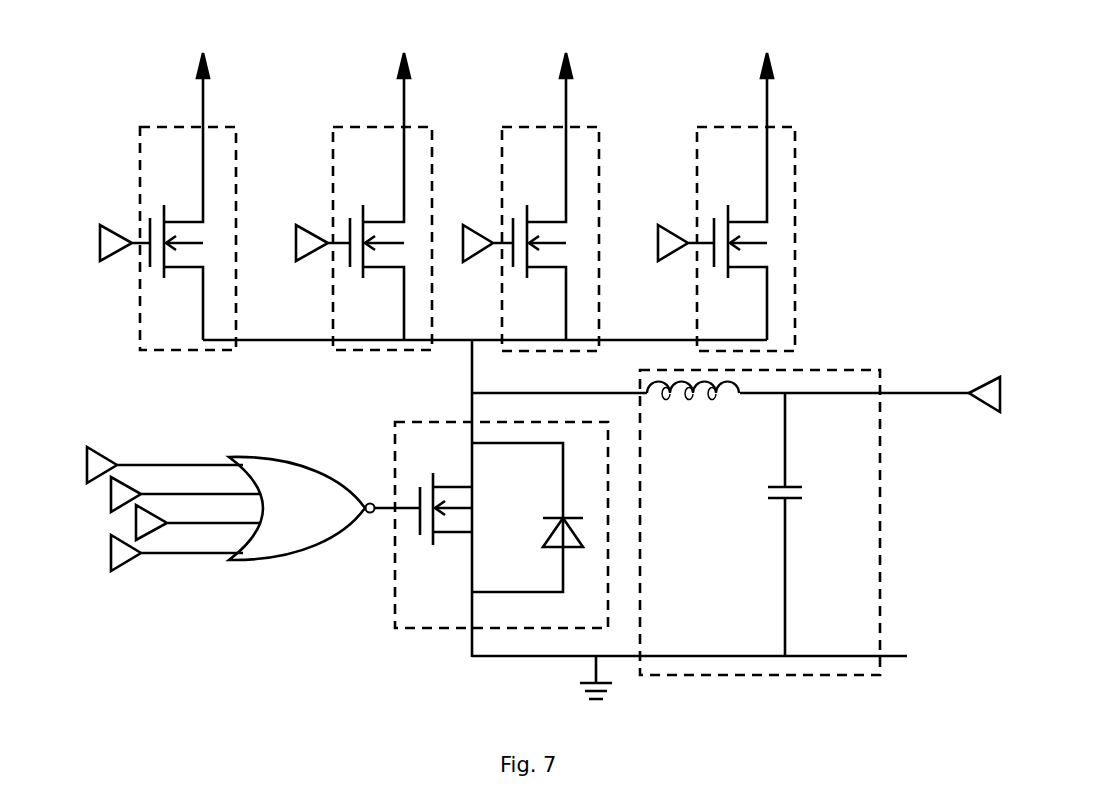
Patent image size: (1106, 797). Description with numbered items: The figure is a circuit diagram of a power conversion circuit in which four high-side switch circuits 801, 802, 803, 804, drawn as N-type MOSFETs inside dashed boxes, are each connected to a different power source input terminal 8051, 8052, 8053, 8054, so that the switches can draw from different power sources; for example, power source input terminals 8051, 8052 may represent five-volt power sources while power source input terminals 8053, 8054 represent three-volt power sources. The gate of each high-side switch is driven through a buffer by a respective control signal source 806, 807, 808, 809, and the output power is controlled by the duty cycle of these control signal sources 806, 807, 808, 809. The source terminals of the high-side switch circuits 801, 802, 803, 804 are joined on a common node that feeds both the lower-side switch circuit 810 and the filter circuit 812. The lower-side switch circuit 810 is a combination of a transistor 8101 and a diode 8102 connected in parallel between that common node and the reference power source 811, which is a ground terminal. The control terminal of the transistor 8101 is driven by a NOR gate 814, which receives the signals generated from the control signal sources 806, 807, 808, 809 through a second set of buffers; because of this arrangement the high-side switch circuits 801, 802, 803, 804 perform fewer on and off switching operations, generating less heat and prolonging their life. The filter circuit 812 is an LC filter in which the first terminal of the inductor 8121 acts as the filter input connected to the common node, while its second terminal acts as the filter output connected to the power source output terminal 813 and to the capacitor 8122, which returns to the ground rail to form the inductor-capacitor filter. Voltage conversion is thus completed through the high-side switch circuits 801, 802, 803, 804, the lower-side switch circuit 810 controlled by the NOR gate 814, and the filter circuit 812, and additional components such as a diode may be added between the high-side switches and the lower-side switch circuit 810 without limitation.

The high-side switch circuit 801 is at (157, 127).
The high-side switch circuit 802 is at (352, 127).
The high-side switch circuit 803 is at (520, 127).
The high-side switch circuit 804 is at (717, 127).
The power source input terminal 8051 is at (207, 53).
The power source input terminal 8052 is at (408, 53).
The power source input terminal 8053 is at (570, 53).
The power source input terminal 8054 is at (771, 53).
The control signal source 806 is at (100, 245).
The control signal source 807 is at (296, 245).
The control signal source 808 is at (472, 262).
The control signal source 809 is at (658, 245).
The lower-side switch circuit 810 is at (521, 540).
The transistor 8101 is at (475, 509).
The diode 8102 is at (547, 548).
The reference power source 811 is at (576, 683).
The filter circuit 812 is at (804, 522).
The inductor 8121 is at (693, 407).
The capacitor 8122 is at (767, 493).
The power source output terminal 813 is at (1002, 392).
The NOR gate 814 is at (317, 553).